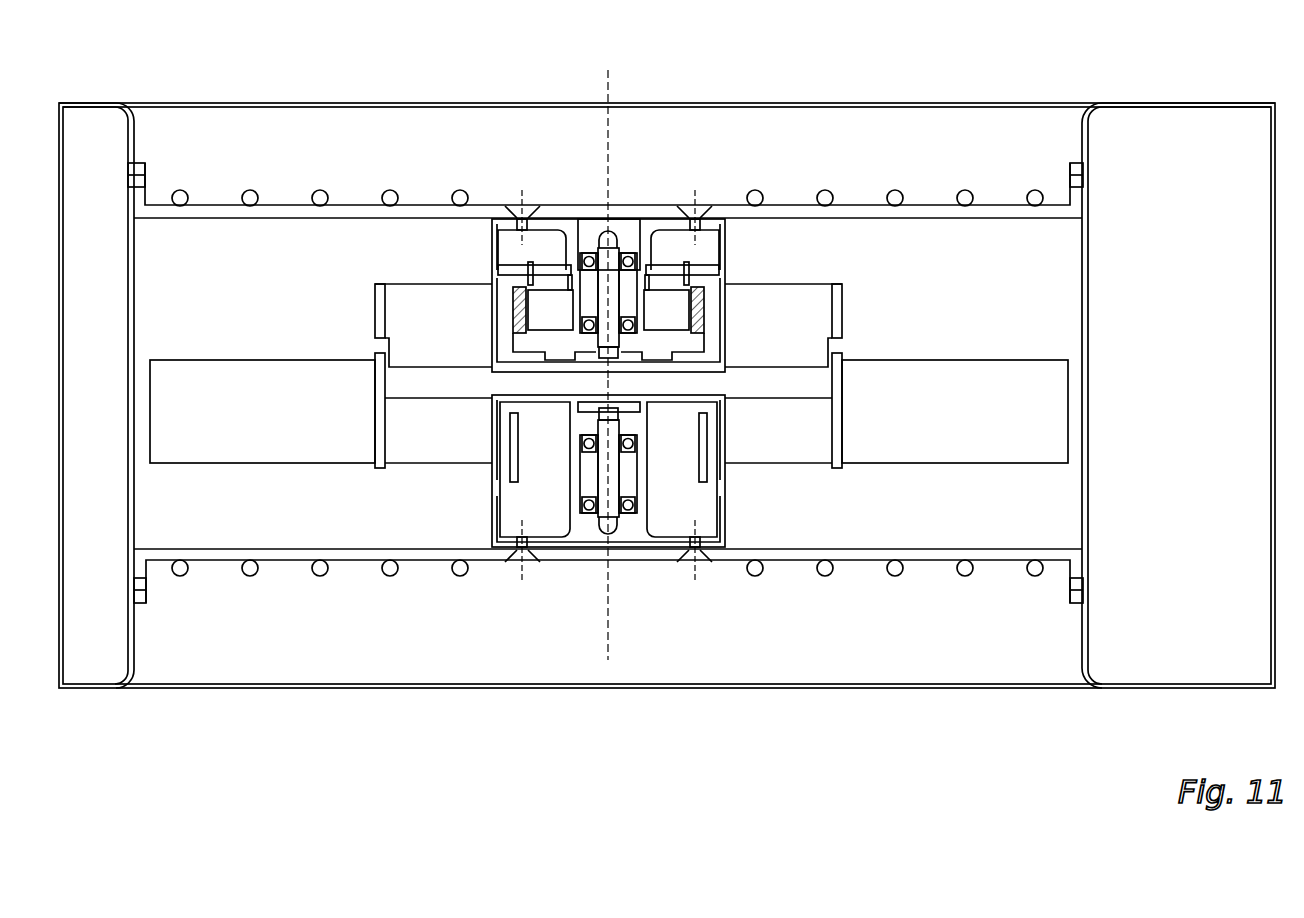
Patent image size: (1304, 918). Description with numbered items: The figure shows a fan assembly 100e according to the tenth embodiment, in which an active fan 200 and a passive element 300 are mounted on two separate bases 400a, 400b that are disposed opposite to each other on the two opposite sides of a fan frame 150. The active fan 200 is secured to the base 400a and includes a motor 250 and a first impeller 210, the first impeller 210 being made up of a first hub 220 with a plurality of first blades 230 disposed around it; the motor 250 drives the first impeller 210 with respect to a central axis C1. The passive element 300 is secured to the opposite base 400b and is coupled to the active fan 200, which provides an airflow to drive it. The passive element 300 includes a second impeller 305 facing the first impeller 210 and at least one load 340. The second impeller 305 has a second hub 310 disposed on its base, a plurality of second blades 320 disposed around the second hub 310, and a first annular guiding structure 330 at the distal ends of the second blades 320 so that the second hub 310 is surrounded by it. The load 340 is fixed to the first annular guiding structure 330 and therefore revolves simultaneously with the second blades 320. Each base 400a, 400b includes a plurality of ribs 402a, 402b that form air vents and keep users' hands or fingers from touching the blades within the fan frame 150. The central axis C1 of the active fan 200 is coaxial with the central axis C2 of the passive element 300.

The fan assembly 100e is at (1108, 19).
The fan frame 150 is at (1166, 133).
The active fan 200 is at (872, 40).
The first impeller 210 is at (908, 76).
The first hub 220 is at (712, 300).
The first blades 230 is at (815, 300).
The motor 250 is at (665, 240).
The passive element 300 is at (1010, 764).
The second impeller 305 is at (953, 726).
The second hub 310 is at (793, 448).
The second blades 320 is at (835, 472).
The first annular guiding structure 330 is at (720, 488).
The load 340 is at (955, 437).
The base 400a is at (380, 130).
The base 400b is at (348, 655).
The ribs 402a is at (250, 190).
The ribs 402b is at (250, 576).
The central axis C1 is at (612, 160).
The central axis C2 is at (612, 622).